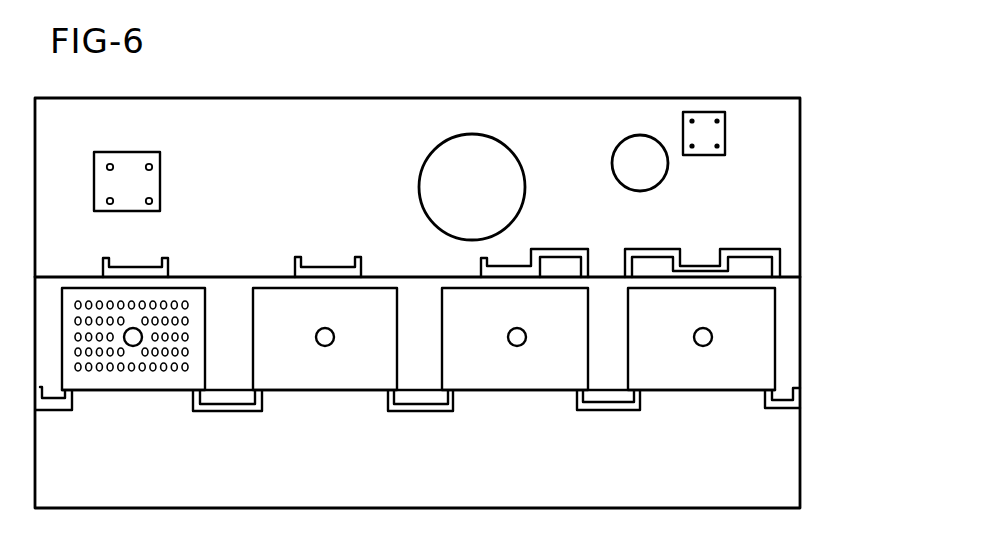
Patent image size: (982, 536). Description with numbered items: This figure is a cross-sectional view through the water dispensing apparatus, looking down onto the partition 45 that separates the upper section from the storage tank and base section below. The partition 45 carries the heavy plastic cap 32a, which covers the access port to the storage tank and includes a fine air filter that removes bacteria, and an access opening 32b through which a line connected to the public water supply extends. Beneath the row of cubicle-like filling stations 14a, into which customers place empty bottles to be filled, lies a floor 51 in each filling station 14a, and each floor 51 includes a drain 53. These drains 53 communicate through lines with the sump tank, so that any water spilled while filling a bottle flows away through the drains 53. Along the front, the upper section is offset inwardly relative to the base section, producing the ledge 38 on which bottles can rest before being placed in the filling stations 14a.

The filling stations 14a is at (705, 398).
The heavy plastic cap 32a is at (488, 158).
The access opening 32b is at (654, 139).
The ledge 38 is at (750, 468).
The partition 45 is at (258, 131).
The floor 51 is at (223, 370).
The drains 53 is at (127, 377).